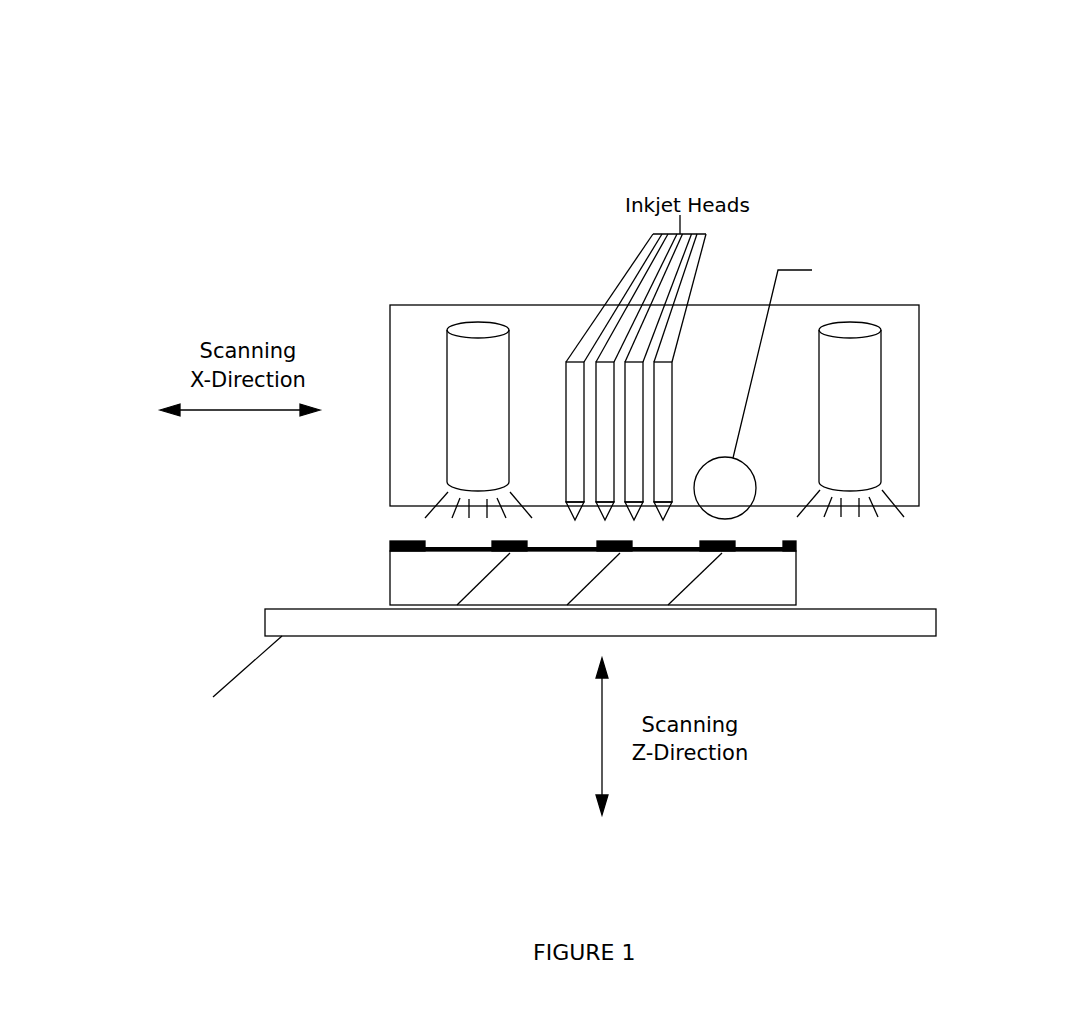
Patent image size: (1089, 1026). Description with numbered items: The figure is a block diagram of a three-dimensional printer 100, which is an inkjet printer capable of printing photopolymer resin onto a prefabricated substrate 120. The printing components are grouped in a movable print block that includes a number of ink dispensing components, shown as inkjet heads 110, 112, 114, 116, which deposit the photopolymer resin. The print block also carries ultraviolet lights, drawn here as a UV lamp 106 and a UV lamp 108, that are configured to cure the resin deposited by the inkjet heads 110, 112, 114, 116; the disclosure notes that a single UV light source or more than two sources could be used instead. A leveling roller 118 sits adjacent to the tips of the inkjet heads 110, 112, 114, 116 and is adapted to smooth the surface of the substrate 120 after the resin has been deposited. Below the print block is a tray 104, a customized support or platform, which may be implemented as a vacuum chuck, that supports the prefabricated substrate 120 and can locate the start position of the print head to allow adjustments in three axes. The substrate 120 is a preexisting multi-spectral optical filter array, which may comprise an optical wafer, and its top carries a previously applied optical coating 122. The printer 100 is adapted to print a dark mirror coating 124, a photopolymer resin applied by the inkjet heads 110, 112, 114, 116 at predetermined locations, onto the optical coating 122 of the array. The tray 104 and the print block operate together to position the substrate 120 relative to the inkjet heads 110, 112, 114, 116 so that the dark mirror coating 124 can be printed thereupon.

The three-dimensional printer 100 is at (878, 100).
The tray 104 is at (618, 633).
The UV lamp 106 is at (830, 470).
The UV lamp 108 is at (458, 475).
The inkjet head 110 is at (616, 290).
The inkjet head 112 is at (640, 285).
The inkjet head 114 is at (668, 272).
The inkjet head 116 is at (692, 262).
The leveling roller 118 is at (832, 390).
The substrate 120 is at (796, 577).
The optical coating 122 is at (763, 527).
The dark mirror coating 124 is at (787, 578).